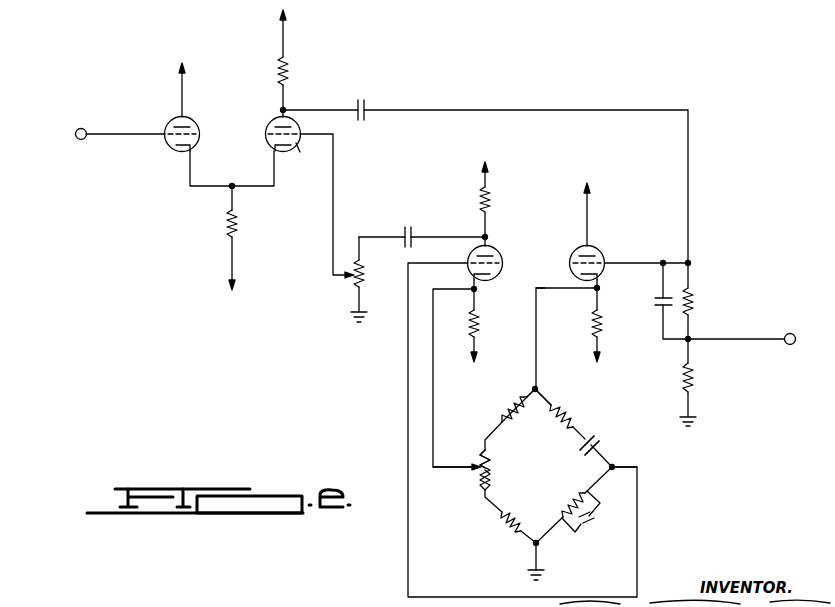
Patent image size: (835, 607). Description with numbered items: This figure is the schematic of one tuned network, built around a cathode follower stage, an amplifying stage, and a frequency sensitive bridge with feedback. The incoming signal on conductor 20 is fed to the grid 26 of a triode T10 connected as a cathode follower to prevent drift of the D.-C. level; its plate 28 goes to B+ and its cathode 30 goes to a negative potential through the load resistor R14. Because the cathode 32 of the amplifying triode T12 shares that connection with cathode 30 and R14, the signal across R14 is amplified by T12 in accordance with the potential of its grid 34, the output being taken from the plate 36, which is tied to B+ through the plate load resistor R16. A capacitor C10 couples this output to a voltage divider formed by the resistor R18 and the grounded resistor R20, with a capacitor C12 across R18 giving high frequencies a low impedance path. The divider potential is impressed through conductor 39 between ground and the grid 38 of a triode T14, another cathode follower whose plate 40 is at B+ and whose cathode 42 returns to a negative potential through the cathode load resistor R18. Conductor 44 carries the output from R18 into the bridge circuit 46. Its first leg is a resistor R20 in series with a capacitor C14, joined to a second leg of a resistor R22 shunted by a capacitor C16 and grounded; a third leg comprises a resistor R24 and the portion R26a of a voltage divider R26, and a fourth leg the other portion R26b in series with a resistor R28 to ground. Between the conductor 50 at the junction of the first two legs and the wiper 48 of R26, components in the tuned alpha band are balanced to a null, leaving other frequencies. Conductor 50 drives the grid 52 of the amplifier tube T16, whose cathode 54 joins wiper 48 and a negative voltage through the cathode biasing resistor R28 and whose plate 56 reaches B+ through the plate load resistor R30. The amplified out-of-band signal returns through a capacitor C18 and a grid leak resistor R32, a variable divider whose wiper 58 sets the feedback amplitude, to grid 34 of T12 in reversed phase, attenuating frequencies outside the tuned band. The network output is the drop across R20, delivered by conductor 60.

The conductor 20 is at (103, 127).
The triode T10 is at (175, 115).
The grid 26 is at (168, 133).
The plate 28 is at (183, 125).
The cathode 30 is at (192, 163).
The amplifying tube T12 is at (273, 125).
The cathode 32 is at (273, 157).
The grid 34 is at (295, 143).
The plate 36 is at (290, 125).
The plate load resistor R16 is at (290, 65).
The capacitor C10 is at (365, 100).
The load resistor R14 is at (227, 225).
The capacitor C18 is at (423, 205).
The grid leak resistor R32 is at (367, 263).
The wiper 58 is at (343, 275).
The plate load resistor R30 is at (540, 173).
The amplifier tube T16 is at (493, 245).
The grid 52 is at (503, 260).
The plate 56 is at (467, 257).
The cathode 54 is at (483, 285).
The cathode biasing resistor R28 is at (508, 318).
The triode T14 is at (583, 245).
The plate 40 is at (593, 243).
The grid 38 is at (593, 253).
The conductor 39 is at (625, 262).
The cathode 42 is at (593, 275).
The conductor 44 is at (555, 287).
The resistor R18 is at (597, 322).
The capacitor C12 is at (653, 302).
The conductor 60 is at (737, 338).
The resistor R20 is at (692, 380).
The resistor R24 is at (507, 412).
The frequency sensitive bridge circuit 46 is at (530, 420).
The wiper 48 is at (447, 465).
The capacitor C14 is at (597, 443).
The portion of voltage divider R26a is at (488, 457).
The conductor 50 is at (627, 467).
The portion of voltage divider R26b is at (490, 473).
The voltage divider R26 is at (475, 483).
The resistor R22 is at (567, 505).
The capacitor C16 is at (592, 530).